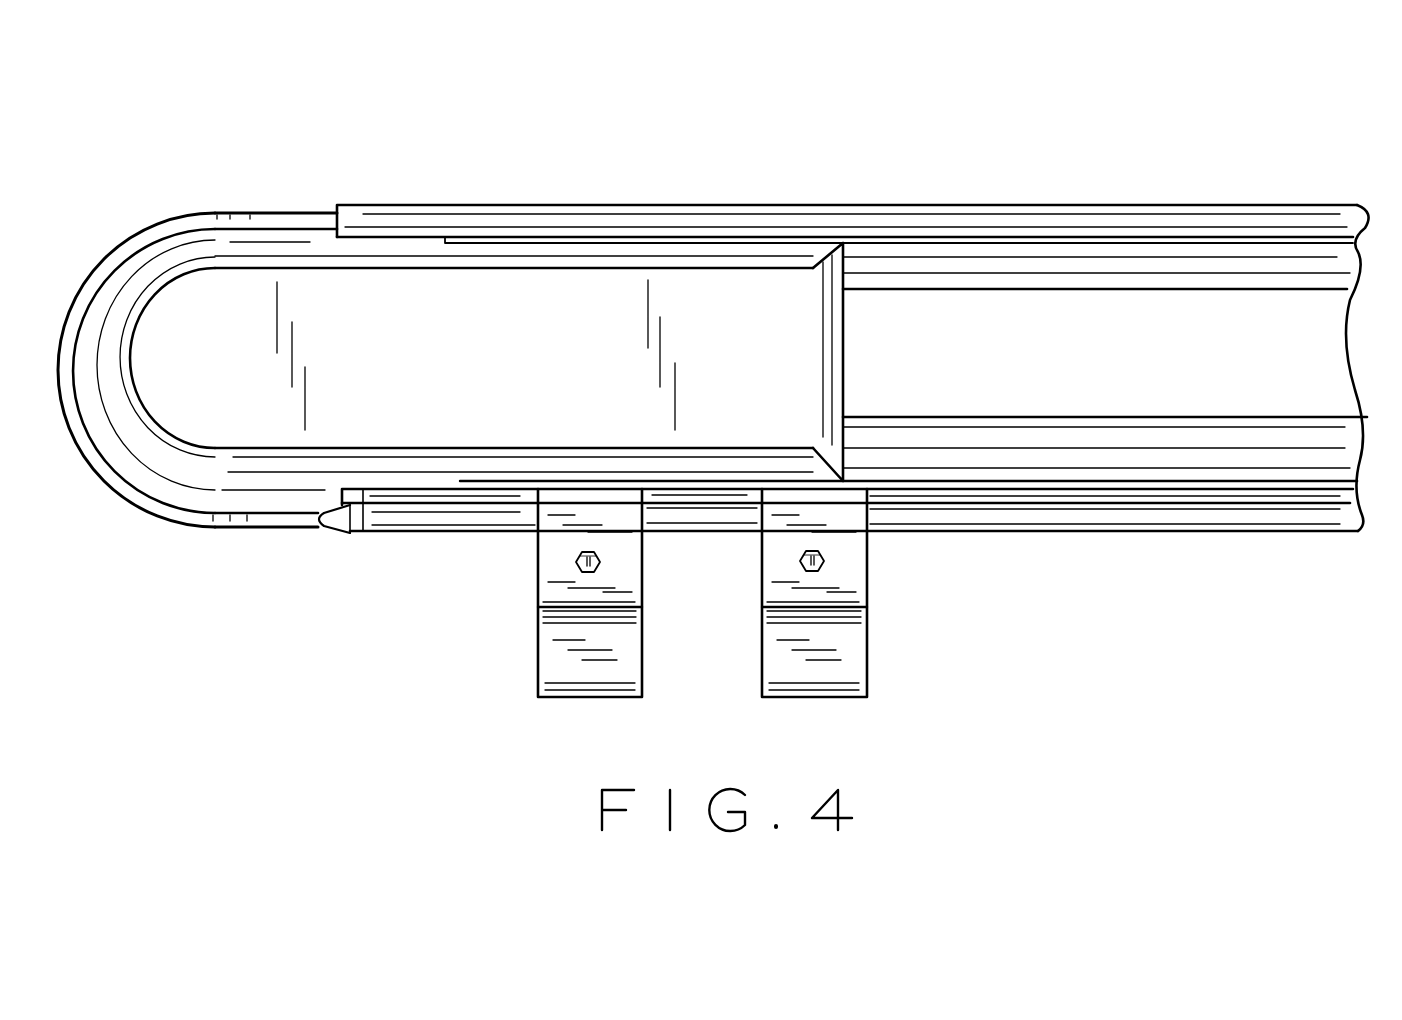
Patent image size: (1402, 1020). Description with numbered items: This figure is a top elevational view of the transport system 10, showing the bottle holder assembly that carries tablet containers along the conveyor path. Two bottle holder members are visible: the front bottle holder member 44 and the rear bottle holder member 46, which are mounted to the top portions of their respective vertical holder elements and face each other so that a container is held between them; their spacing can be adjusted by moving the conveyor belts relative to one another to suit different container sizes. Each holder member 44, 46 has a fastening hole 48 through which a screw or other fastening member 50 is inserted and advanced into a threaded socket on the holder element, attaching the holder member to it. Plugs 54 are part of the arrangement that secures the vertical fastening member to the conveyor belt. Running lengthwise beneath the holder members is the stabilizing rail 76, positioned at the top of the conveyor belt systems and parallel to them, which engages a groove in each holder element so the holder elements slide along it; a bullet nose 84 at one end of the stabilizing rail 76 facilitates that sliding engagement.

The transport system 10 is at (111, 228).
The front bottle holder member 44 is at (568, 670).
The rear bottle holder member 46 is at (847, 670).
The fastening hole 48 is at (600, 566).
The fastening member 50 is at (576, 562).
The plug 54 is at (803, 568).
The stabilizing rail 76 is at (395, 527).
The bullet nose 84 is at (335, 528).